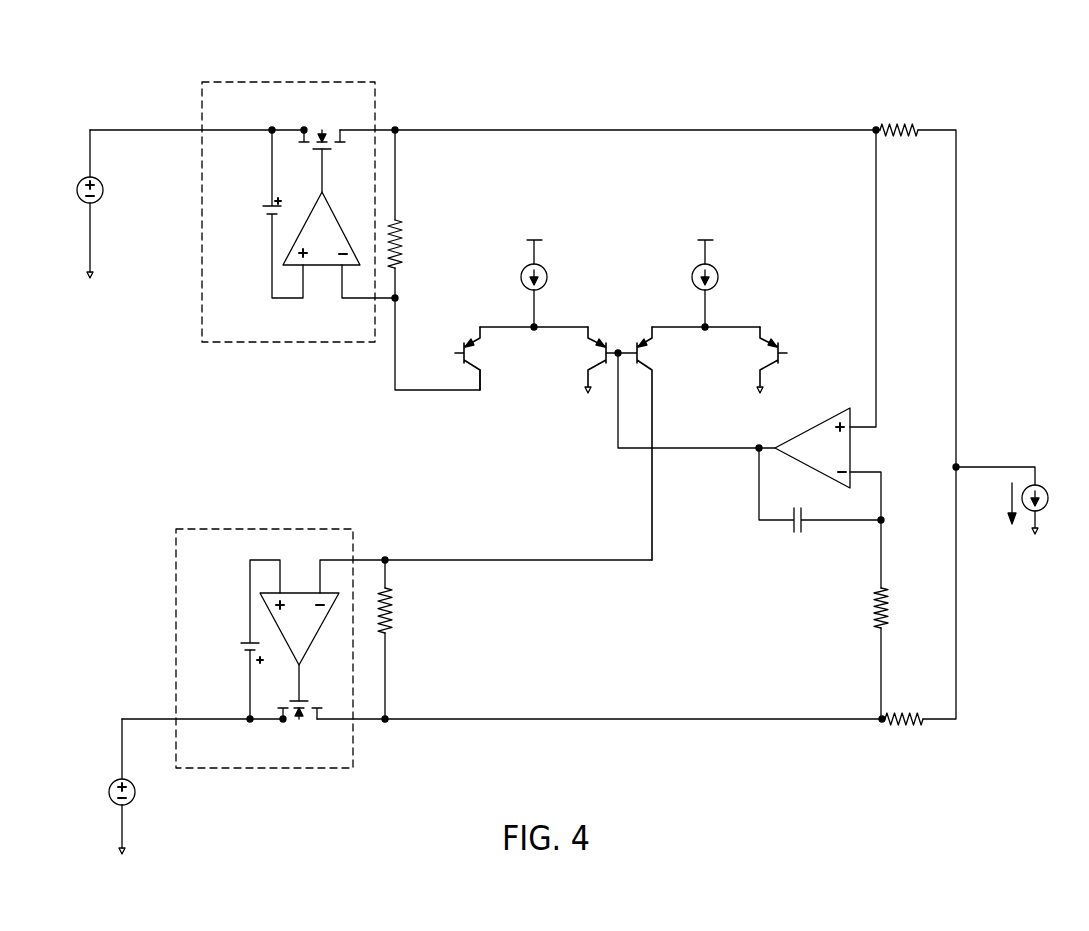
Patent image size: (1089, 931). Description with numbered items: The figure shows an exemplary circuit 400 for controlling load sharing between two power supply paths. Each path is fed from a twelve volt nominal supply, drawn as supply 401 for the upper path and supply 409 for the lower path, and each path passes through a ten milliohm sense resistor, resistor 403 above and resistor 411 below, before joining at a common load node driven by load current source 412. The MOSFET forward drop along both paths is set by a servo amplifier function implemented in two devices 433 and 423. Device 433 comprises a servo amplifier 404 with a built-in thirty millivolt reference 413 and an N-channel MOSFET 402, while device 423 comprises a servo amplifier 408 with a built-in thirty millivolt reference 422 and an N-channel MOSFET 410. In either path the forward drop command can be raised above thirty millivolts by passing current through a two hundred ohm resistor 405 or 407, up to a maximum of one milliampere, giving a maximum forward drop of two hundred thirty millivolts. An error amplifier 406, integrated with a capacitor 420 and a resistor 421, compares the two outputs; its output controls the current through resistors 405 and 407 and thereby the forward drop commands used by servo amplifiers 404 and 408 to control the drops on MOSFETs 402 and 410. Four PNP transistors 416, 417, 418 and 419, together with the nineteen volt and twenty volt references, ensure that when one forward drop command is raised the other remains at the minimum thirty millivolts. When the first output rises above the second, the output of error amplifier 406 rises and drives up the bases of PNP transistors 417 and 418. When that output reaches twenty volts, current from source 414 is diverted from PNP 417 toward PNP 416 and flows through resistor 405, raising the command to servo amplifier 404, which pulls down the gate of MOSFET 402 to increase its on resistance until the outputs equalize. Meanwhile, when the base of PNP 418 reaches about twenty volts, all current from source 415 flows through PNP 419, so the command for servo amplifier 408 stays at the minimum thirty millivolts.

The circuit 400 is at (673, 53).
The first 12V nominal supply 401 is at (85, 203).
The N-channel MOSFET 402 is at (320, 110).
The first 10 milliohm sense resistor 403 is at (892, 84).
The servo amplifier 404 is at (320, 267).
The resistor 405 is at (420, 262).
The error amplifier 406 is at (852, 439).
The resistor 407 is at (411, 636).
The servo amplifier 408 is at (305, 592).
The second 12V nominal supply 409 is at (109, 783).
The N-channel MOSFET 410 is at (302, 750).
The second 10 milliohm sense resistor 411 is at (913, 770).
The load current source 412 is at (1030, 512).
The 30 mV reference 413 is at (246, 183).
The current source 414 is at (522, 271).
The current source 415 is at (693, 271).
The PNP transistor 416 is at (496, 363).
The PNP transistor 417 is at (574, 360).
The PNP transistor 418 is at (666, 363).
The PNP transistor 419 is at (744, 360).
The capacitor 420 is at (796, 545).
The resistor 421 is at (858, 610).
The 30 mV reference 422 is at (228, 614).
The device 423 is at (167, 622).
The device 433 is at (192, 310).